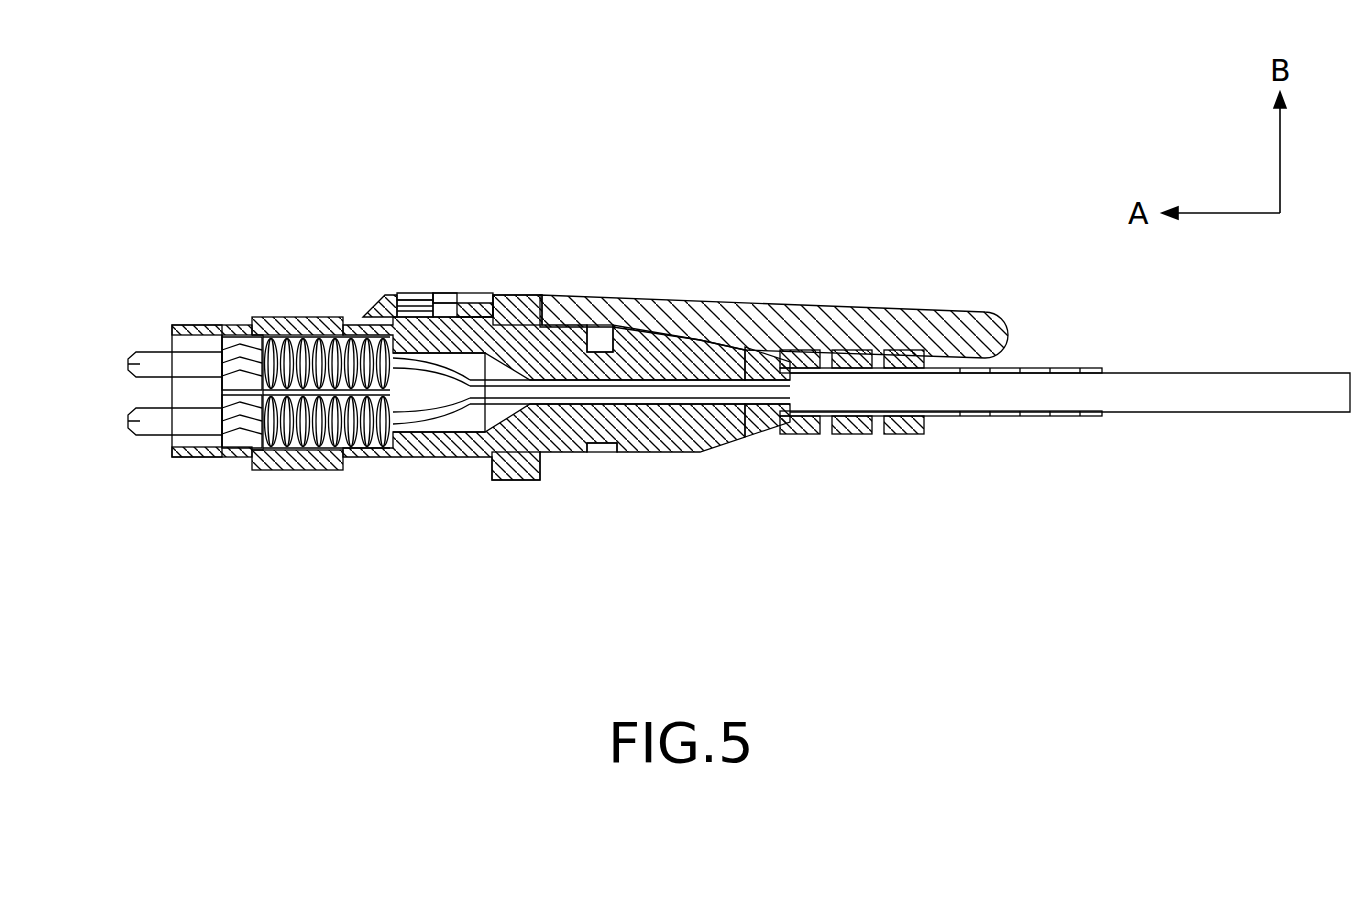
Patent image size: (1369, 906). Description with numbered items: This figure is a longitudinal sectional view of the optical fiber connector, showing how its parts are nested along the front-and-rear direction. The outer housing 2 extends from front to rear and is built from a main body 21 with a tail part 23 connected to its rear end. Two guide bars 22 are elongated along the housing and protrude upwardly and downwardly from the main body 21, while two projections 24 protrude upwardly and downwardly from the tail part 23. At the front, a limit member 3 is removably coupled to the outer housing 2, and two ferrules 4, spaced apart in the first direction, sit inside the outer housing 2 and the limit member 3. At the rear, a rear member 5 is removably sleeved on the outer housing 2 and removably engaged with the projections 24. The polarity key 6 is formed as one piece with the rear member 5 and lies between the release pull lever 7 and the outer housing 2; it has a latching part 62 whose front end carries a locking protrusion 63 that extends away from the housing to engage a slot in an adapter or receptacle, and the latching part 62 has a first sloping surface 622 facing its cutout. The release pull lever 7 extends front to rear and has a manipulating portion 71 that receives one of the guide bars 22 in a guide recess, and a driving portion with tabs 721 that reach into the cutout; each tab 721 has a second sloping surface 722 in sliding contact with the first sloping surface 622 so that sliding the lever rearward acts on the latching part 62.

The outer housing 2 is at (566, 402).
The limit member 3 is at (178, 325).
The ferrules 4 is at (135, 425).
The rear member 5 is at (816, 465).
The polarity key 6 is at (396, 239).
The release pull lever 7 is at (774, 250).
The main body 21 is at (420, 452).
The guide bars 22 is at (510, 295).
The tail part 23 is at (633, 450).
The projections 24 is at (598, 328).
The latching part 62 is at (470, 308).
The locking protrusion 63 is at (373, 308).
The manipulating portion 71 is at (933, 312).
The tabs 721 is at (403, 302).
The second sloping surface 722 is at (462, 313).
The first sloping surface 622 is at (422, 303).